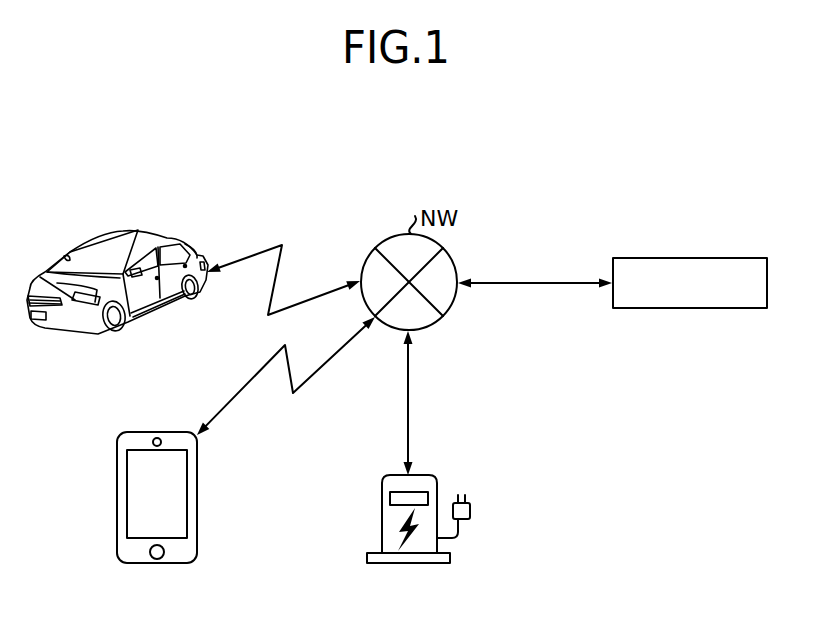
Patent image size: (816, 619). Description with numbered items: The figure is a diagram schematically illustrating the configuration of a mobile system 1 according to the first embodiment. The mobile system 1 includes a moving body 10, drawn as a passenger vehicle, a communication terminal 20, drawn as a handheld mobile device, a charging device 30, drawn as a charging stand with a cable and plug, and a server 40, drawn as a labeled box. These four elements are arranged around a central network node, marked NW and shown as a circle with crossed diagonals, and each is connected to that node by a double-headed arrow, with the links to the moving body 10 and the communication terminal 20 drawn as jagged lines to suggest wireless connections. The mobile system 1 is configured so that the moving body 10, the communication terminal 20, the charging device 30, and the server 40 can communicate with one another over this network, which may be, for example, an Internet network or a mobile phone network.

The mobile system 1 is at (645, 148).
The moving body 10 is at (137, 210).
The communication terminal 20 is at (135, 432).
The charging device 30 is at (420, 475).
The server 40 is at (714, 258).